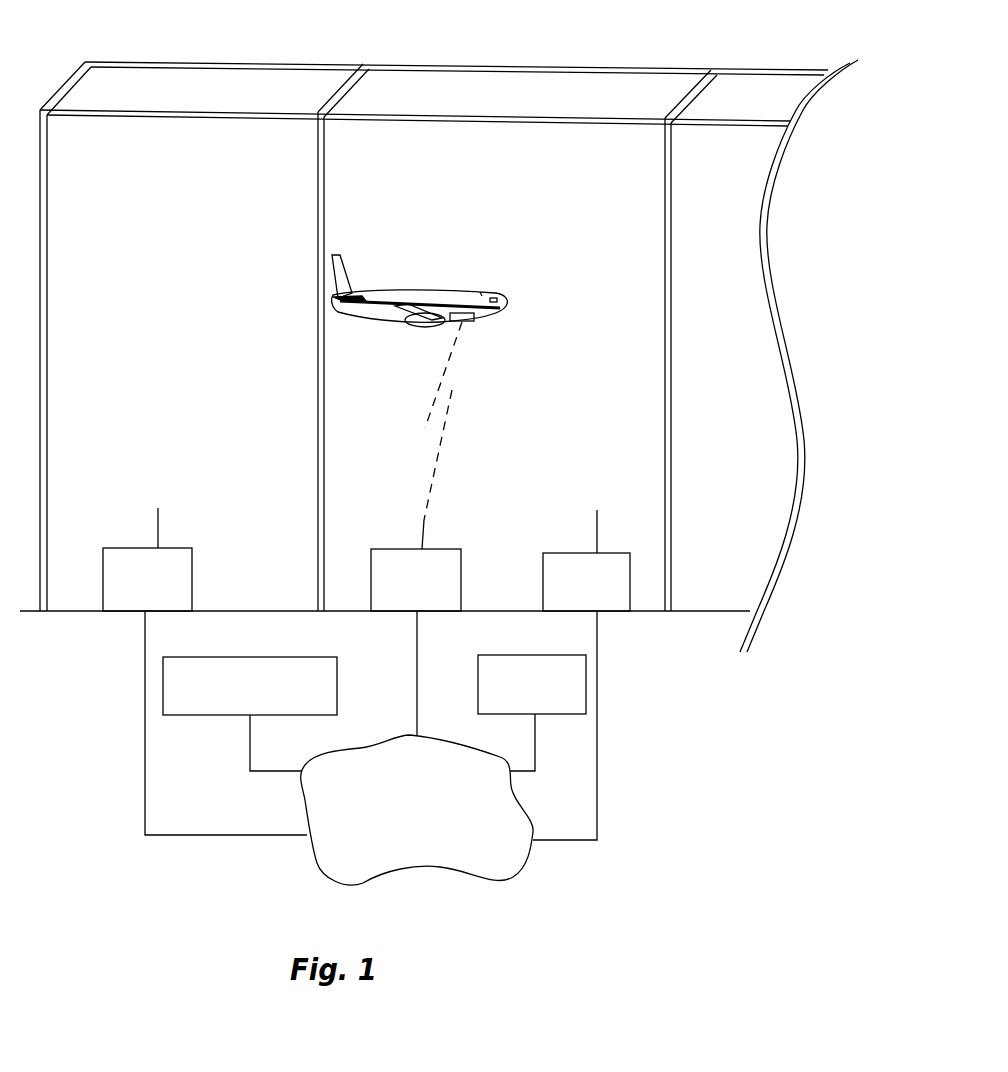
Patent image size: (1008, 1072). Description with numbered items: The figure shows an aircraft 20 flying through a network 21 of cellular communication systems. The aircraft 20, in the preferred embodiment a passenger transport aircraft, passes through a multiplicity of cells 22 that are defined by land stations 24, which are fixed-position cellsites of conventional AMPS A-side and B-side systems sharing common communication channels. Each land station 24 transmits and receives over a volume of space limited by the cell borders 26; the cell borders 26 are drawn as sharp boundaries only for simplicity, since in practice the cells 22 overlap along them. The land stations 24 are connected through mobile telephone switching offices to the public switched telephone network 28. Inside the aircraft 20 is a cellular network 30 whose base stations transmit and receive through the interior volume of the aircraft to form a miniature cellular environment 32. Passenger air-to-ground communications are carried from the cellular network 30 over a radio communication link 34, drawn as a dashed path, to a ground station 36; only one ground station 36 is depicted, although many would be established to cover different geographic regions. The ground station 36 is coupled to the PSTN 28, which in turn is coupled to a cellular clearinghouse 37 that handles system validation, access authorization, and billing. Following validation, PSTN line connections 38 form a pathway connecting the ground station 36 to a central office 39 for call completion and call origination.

The aircraft 20 is at (453, 290).
The network of cellular communication systems 21 is at (207, 897).
The cells 22 is at (190, 132).
The land stations 24 is at (180, 548).
The cell borders 26 is at (650, 64).
The public switched telephone network (PSTN) 28 is at (518, 867).
The cellular network 30 is at (463, 320).
The miniature cellular environment 32 is at (480, 292).
The radio communication link 34 is at (437, 457).
The ground station 36 is at (445, 550).
The cellular clearinghouse 37 is at (273, 657).
The PSTN line connections 38 is at (418, 668).
The central office 39 is at (533, 655).